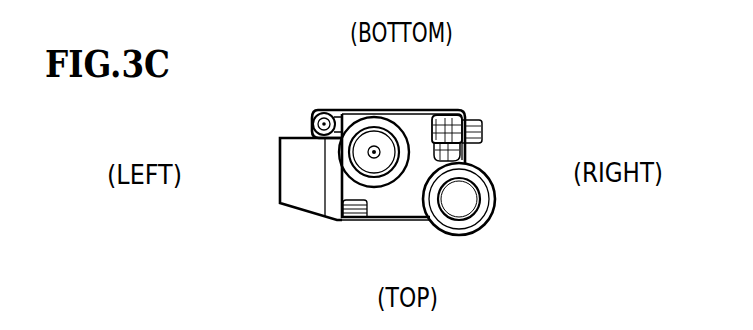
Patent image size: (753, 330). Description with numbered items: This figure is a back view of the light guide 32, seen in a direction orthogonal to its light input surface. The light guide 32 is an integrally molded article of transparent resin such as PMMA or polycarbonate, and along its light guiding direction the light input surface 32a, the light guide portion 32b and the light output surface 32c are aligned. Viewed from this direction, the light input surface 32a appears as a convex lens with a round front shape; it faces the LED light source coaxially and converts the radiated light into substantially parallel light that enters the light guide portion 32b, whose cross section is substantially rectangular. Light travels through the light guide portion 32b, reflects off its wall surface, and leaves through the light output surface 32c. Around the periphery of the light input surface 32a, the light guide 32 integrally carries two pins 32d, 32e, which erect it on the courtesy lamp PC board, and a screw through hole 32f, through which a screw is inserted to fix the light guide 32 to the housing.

The light guide 32 is at (503, 123).
The light input surface 32a is at (372, 141).
The light guide portion 32b is at (308, 185).
The light output surface 32c is at (296, 170).
The pin 32d is at (309, 118).
The pin 32e is at (452, 127).
The screw through hole 32f is at (450, 209).